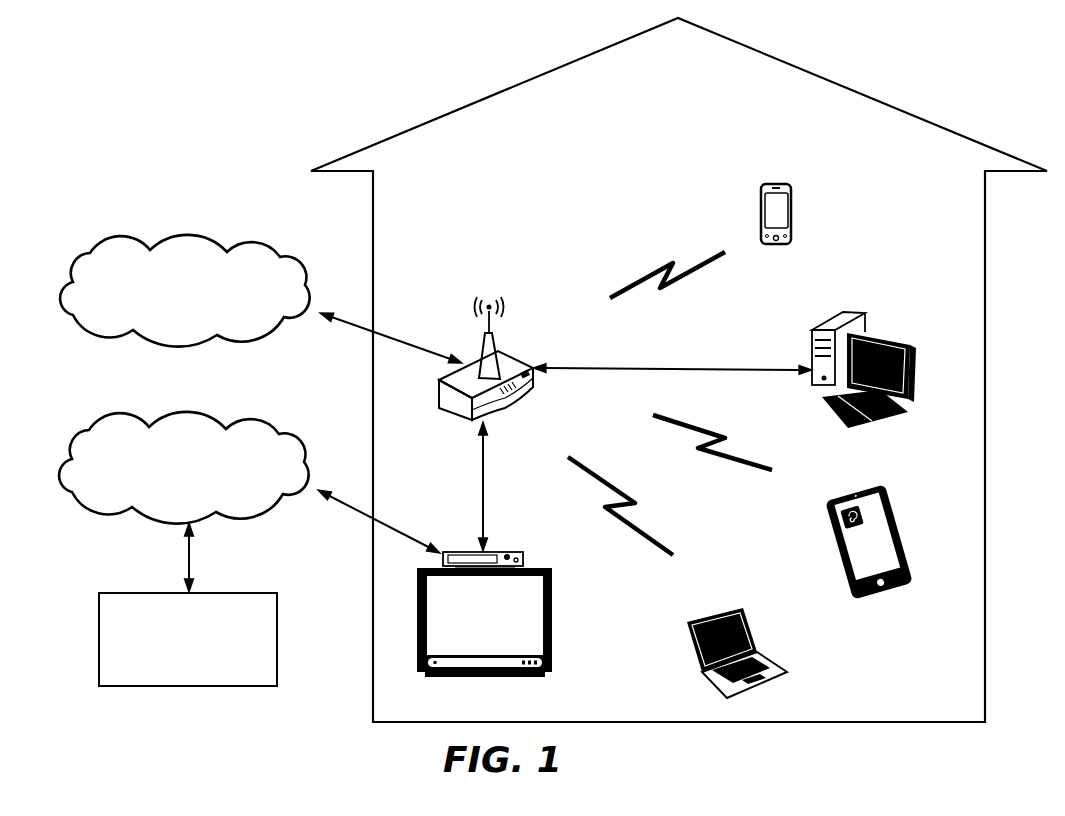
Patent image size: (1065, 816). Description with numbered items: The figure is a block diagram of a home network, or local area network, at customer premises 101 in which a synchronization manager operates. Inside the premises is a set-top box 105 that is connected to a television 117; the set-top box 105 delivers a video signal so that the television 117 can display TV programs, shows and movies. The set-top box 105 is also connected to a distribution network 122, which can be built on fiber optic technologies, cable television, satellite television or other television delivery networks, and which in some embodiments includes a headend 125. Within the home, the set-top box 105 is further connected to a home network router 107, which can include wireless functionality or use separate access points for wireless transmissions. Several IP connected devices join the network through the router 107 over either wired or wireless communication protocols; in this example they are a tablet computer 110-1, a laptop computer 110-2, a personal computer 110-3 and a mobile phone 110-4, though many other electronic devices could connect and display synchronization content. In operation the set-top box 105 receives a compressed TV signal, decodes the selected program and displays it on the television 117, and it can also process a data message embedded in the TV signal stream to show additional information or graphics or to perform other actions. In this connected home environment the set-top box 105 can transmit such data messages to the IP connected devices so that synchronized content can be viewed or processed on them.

The customer premises 101 is at (856, 90).
The home network router 107 is at (510, 348).
The set-top box 105 is at (509, 552).
The television 117 is at (552, 591).
The tablet computer 110-1 is at (885, 600).
The laptop computer 110-2 is at (760, 650).
The personal computer 110-3 is at (850, 312).
The mobile phone 110-4 is at (776, 245).
The distribution network 122 is at (184, 468).
The headend 125 is at (188, 639).